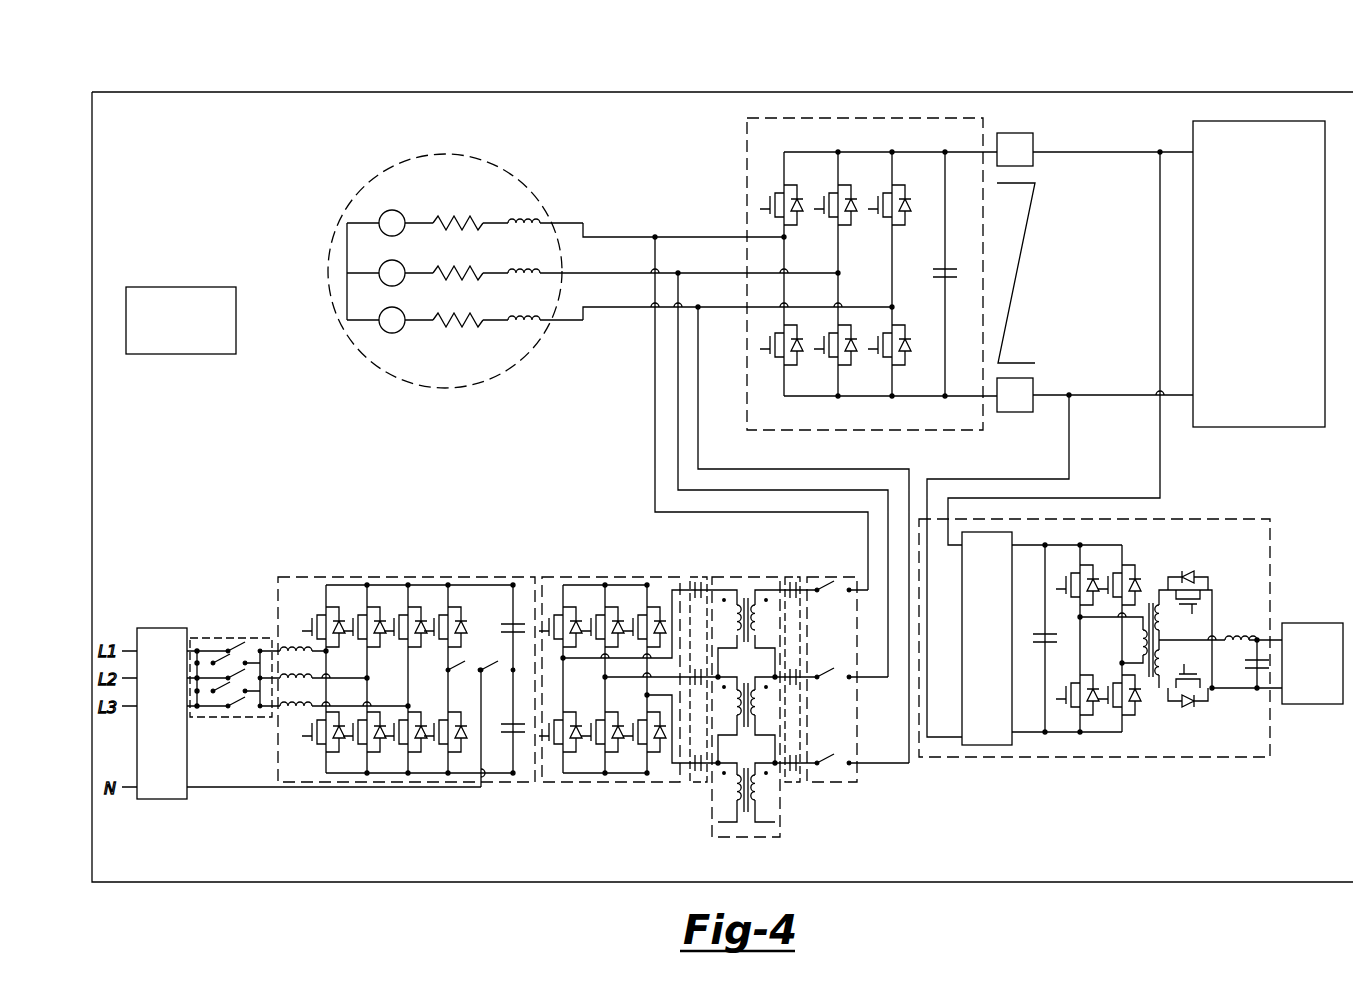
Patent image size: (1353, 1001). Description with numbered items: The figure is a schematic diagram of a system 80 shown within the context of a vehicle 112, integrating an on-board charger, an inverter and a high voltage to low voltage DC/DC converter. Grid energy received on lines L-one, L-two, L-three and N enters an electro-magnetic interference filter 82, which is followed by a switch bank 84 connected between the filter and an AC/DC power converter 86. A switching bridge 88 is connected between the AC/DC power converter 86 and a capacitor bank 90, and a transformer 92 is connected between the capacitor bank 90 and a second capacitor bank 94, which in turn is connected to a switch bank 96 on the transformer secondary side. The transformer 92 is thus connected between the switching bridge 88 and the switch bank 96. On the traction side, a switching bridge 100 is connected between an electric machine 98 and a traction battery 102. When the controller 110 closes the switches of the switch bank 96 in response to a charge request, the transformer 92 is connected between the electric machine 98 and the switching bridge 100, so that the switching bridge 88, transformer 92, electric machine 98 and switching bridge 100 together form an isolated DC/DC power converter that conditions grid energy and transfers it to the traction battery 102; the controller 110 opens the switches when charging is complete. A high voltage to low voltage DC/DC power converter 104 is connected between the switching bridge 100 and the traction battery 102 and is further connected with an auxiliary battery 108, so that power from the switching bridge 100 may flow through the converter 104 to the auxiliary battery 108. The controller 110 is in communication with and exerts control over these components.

The system 80 is at (722, 460).
The electro-magnetic interference filter 82 is at (160, 628).
The switch bank 84 is at (233, 638).
The AC/DC power converter 86 is at (406, 577).
The switching bridge 88 is at (612, 577).
The capacitor bank 90 is at (698, 782).
The transformer 92 is at (745, 840).
The capacitor bank 94 is at (795, 782).
The switch bank 96 is at (833, 782).
The electric machine 98 is at (447, 388).
The switching bridge 100 is at (745, 150).
The traction battery 102 is at (1258, 427).
The high voltage to low voltage DC/DC power converter 104 is at (1092, 757).
The auxiliary battery 108 is at (1313, 623).
The controller 110 is at (178, 287).
The vehicle 112 is at (737, 92).